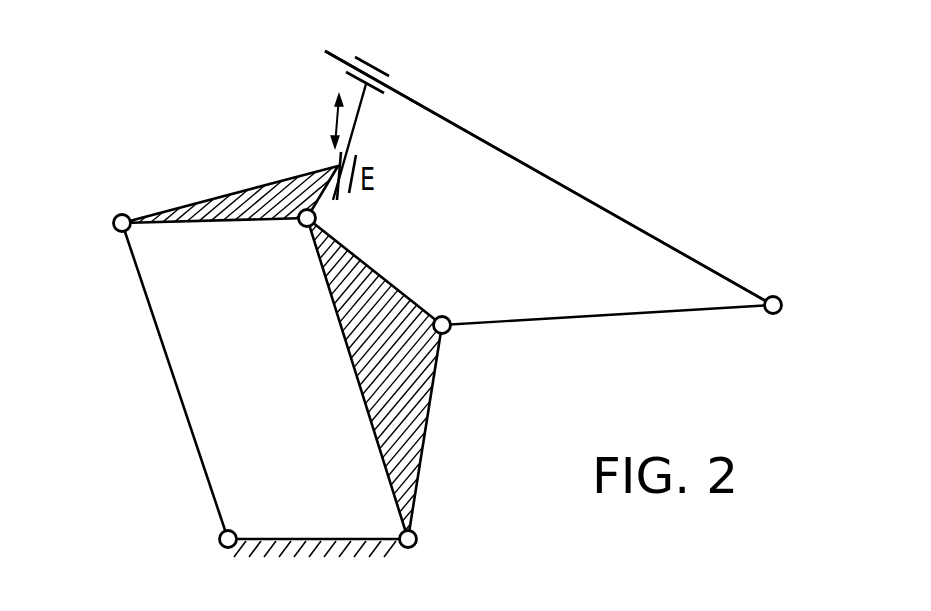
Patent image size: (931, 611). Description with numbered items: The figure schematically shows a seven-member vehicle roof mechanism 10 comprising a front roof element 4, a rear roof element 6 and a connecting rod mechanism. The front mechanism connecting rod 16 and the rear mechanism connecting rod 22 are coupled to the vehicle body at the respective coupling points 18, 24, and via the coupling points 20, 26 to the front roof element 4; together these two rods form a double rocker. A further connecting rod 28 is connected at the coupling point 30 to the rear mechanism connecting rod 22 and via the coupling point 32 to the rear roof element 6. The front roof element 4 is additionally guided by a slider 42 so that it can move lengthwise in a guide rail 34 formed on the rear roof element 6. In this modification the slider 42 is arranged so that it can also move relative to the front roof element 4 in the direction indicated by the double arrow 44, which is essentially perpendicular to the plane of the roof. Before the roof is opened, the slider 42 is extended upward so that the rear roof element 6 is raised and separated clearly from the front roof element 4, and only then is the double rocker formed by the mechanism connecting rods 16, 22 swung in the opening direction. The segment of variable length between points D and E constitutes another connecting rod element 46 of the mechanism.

The front roof element 4 is at (223, 197).
The rear roof element 6 is at (637, 230).
The guide rail 34 is at (549, 178).
The mechanism / linkage 10 is at (553, 150).
The front mechanism connecting rod 16 is at (178, 397).
The coupling point 18 is at (198, 563).
The coupling point 20 is at (81, 206).
The rear mechanism connecting rod 22 is at (358, 373).
The coupling point 24 is at (452, 563).
The coupling point 26 is at (269, 240).
The connecting rod 28 is at (652, 318).
The coupling point 30 is at (482, 346).
The coupling point 32 is at (800, 328).
The slider 42 is at (428, 60).
The double arrow 44 is at (334, 121).
The connecting rod element 46 is at (360, 117).